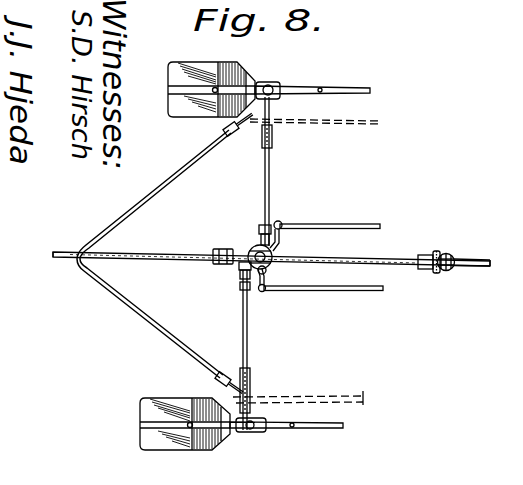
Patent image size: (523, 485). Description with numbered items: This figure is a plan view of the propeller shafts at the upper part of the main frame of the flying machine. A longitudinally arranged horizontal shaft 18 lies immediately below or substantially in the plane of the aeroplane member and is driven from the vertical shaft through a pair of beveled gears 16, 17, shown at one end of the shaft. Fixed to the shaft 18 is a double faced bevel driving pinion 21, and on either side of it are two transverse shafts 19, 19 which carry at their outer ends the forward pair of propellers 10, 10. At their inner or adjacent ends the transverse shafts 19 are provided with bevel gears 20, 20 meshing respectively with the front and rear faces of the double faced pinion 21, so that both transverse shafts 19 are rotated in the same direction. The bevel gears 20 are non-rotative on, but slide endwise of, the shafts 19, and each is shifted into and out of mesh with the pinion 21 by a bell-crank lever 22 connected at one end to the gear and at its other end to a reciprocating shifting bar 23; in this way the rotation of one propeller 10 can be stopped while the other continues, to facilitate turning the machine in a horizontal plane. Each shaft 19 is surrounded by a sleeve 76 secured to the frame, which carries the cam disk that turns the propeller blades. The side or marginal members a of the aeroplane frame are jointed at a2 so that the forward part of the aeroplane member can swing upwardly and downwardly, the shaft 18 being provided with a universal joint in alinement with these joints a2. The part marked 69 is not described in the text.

The propeller 10 is at (292, 85).
The sleeve 76 is at (276, 101).
The transverse shaft 19 is at (270, 189).
The marginal member a is at (117, 213).
The joint a2 is at (221, 372).
The horizontal shaft 18 is at (133, 256).
The double faced bevel driving pinion 21 is at (252, 248).
The coupling 69 is at (222, 265).
The bevel gear 20 is at (240, 268).
The bell-crank lever 22 is at (285, 209).
The reciprocating shifting bar 23 is at (357, 229).
The beveled gear 16 is at (452, 256).
The beveled gear 17 is at (436, 275).